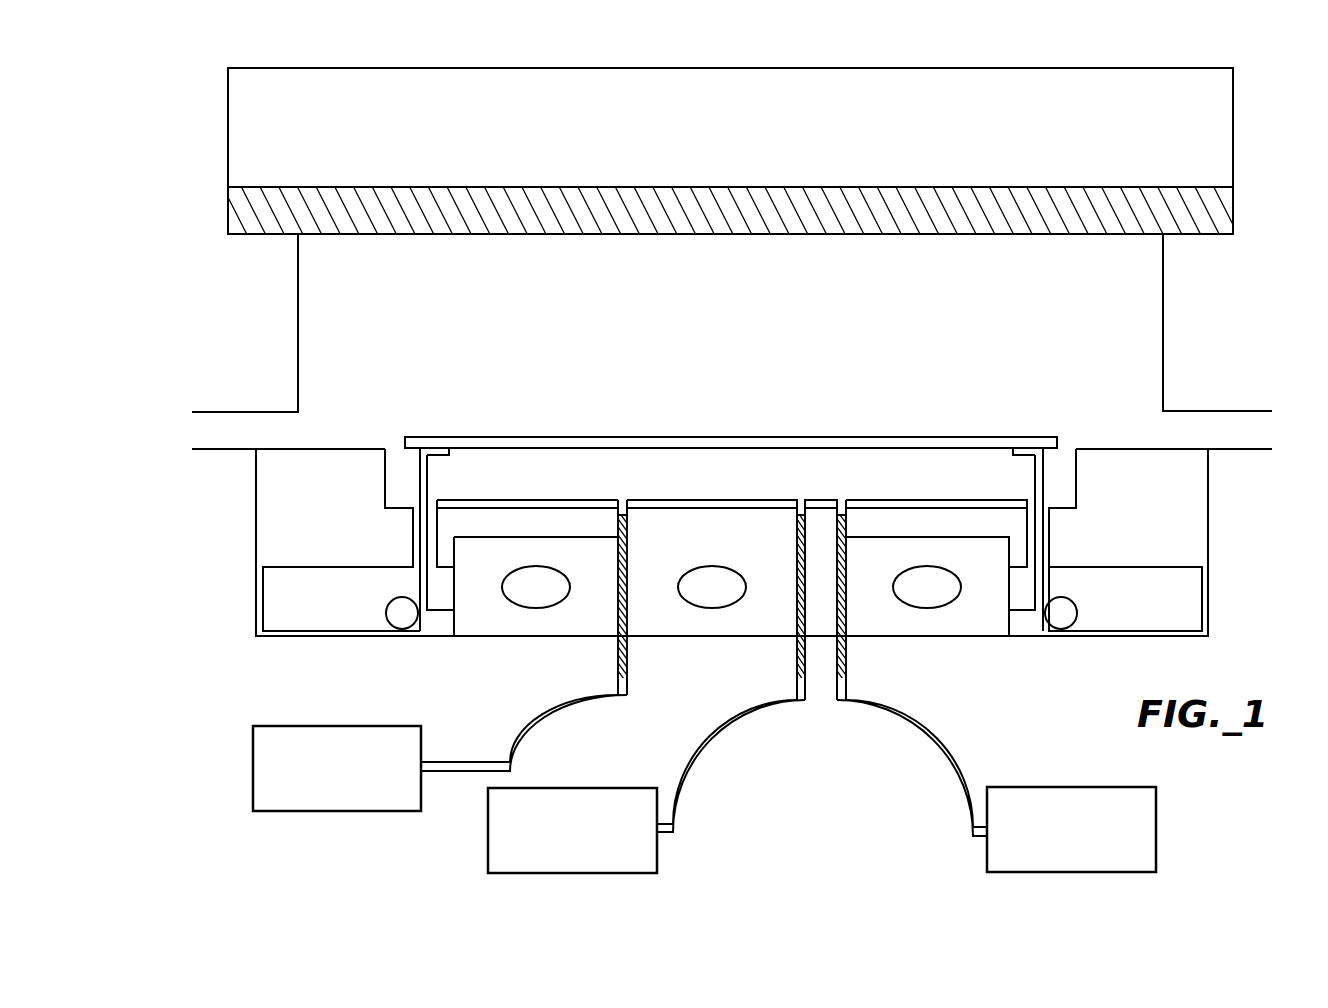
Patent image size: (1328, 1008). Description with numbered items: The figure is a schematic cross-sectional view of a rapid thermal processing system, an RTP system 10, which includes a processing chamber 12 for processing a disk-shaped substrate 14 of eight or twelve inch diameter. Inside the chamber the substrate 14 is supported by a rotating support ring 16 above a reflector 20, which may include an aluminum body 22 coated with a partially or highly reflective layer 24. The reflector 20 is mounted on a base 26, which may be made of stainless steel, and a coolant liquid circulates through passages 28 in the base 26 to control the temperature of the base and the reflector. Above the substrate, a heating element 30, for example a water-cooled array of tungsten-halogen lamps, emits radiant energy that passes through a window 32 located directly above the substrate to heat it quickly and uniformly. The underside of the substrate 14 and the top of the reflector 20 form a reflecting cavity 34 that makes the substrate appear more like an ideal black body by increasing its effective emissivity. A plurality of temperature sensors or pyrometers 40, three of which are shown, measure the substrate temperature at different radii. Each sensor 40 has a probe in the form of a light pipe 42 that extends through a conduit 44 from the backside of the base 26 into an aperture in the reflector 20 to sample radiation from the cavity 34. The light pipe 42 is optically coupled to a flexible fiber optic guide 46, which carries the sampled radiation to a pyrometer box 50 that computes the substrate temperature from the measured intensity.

The RTP system 10 is at (240, 355).
The processing chamber 12 is at (719, 326).
The substrate 14 is at (573, 435).
The rotating support ring 16 is at (430, 480).
The reflector 20 is at (755, 539).
The aluminum body 22 is at (922, 522).
The reflective layer 24 is at (862, 498).
The base 26 is at (935, 625).
The passages 28 is at (955, 605).
The heating element 30 is at (1220, 136).
The window 32 is at (1230, 202).
The reflecting cavity 34 is at (719, 484).
The temperature sensor 40 is at (403, 835).
The light pipe 42 is at (627, 645).
The conduit 44 is at (618, 612).
The fiber optic guide 46 is at (583, 727).
The pyrometer box 50 is at (330, 798).